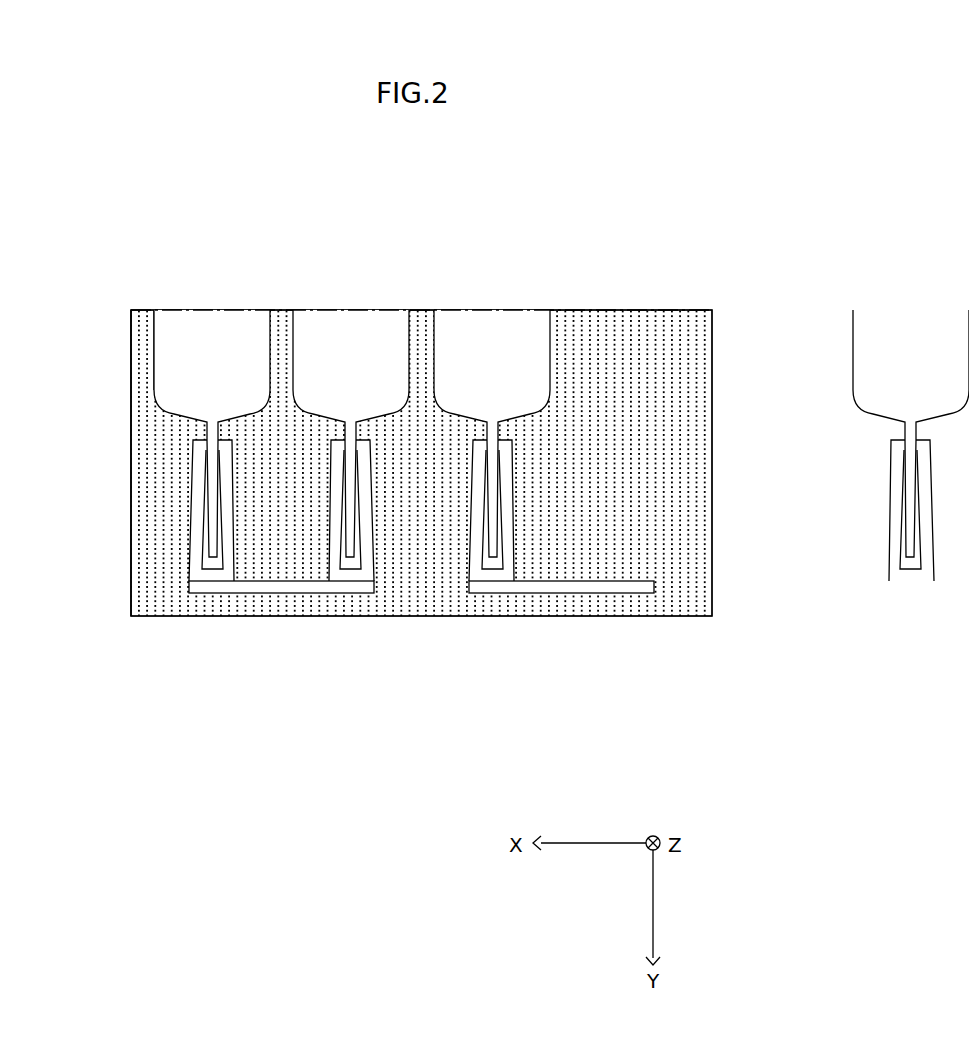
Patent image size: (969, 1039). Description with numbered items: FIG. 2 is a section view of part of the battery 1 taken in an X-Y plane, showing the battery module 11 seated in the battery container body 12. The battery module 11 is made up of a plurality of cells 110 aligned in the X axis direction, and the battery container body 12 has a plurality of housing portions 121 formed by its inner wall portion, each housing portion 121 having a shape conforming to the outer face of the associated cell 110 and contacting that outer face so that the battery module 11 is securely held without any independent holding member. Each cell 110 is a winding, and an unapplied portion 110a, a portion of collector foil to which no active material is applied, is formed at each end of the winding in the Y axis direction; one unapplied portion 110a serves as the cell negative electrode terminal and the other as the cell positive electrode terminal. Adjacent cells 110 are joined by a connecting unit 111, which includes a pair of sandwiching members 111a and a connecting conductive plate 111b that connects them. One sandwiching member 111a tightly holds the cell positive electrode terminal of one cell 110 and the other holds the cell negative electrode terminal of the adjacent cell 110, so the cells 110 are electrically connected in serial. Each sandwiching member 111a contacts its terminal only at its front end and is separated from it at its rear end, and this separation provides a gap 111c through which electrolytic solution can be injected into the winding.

The battery 1 is at (766, 346).
The battery module 11 is at (442, 292).
The cell 110 is at (204, 343).
The unapplied portion 110a is at (212, 548).
The connecting unit 111 is at (219, 567).
The sandwiching member 111a is at (197, 532).
The connecting conductive plate 111b is at (265, 587).
The gap 111c is at (214, 566).
The battery container body 12 is at (672, 447).
The housing portion 121 is at (154, 363).